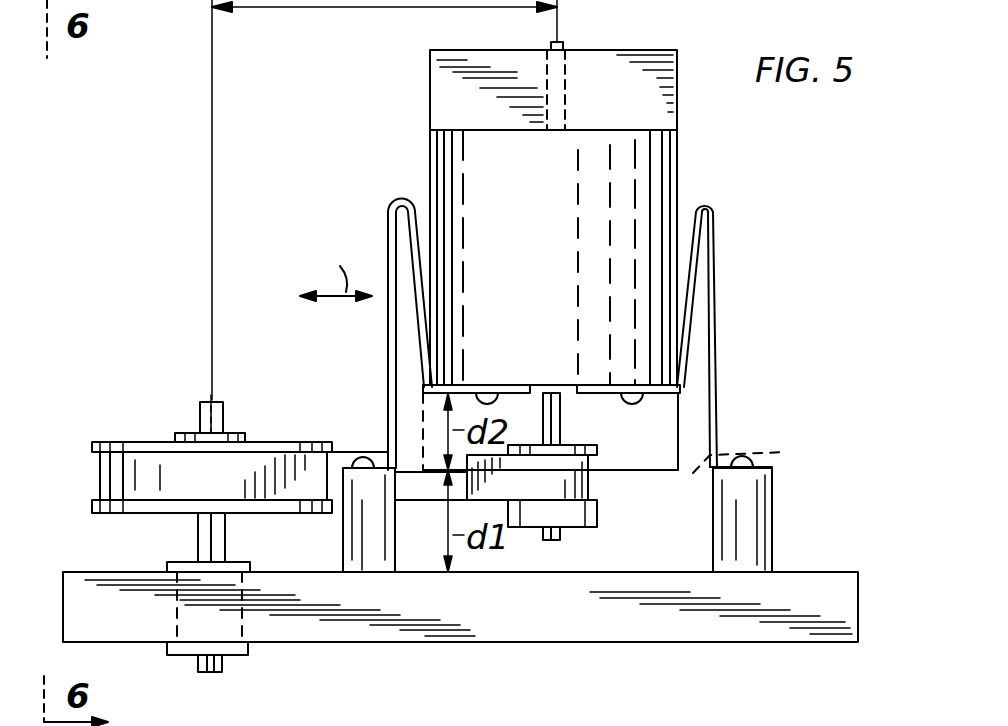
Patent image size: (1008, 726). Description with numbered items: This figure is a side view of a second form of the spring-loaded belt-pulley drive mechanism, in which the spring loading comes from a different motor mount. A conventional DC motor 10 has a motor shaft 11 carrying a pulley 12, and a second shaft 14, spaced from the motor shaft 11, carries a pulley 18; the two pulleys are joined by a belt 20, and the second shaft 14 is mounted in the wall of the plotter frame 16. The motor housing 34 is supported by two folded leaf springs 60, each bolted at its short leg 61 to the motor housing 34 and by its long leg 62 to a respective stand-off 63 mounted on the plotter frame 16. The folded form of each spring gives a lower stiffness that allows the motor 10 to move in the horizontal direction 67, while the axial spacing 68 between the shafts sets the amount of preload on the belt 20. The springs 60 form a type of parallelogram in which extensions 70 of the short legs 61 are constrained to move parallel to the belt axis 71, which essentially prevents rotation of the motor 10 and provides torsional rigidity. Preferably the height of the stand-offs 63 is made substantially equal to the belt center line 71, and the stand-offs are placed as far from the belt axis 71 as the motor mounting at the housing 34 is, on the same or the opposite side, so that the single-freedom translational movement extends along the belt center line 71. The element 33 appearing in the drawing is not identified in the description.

The DC motor 10 is at (553, 213).
The motor end cap 33 is at (622, 104).
The motor shaft 11 is at (560, 415).
The pulley 12 is at (595, 451).
The second shaft 14 is at (225, 540).
The plotter frame 16 is at (582, 632).
The pulley 18 is at (130, 440).
The belt 20 is at (596, 484).
The motor housing 34 is at (477, 380).
The folded leaf spring 60 is at (546, 326).
The short leg 61 is at (415, 315).
The long leg 62 is at (388, 396).
The stand-off 63 is at (343, 548).
The horizontal direction 67 is at (336, 273).
The axial spacing 68 is at (352, 10).
The extension 70 is at (414, 430).
The belt axis 71 is at (763, 454).